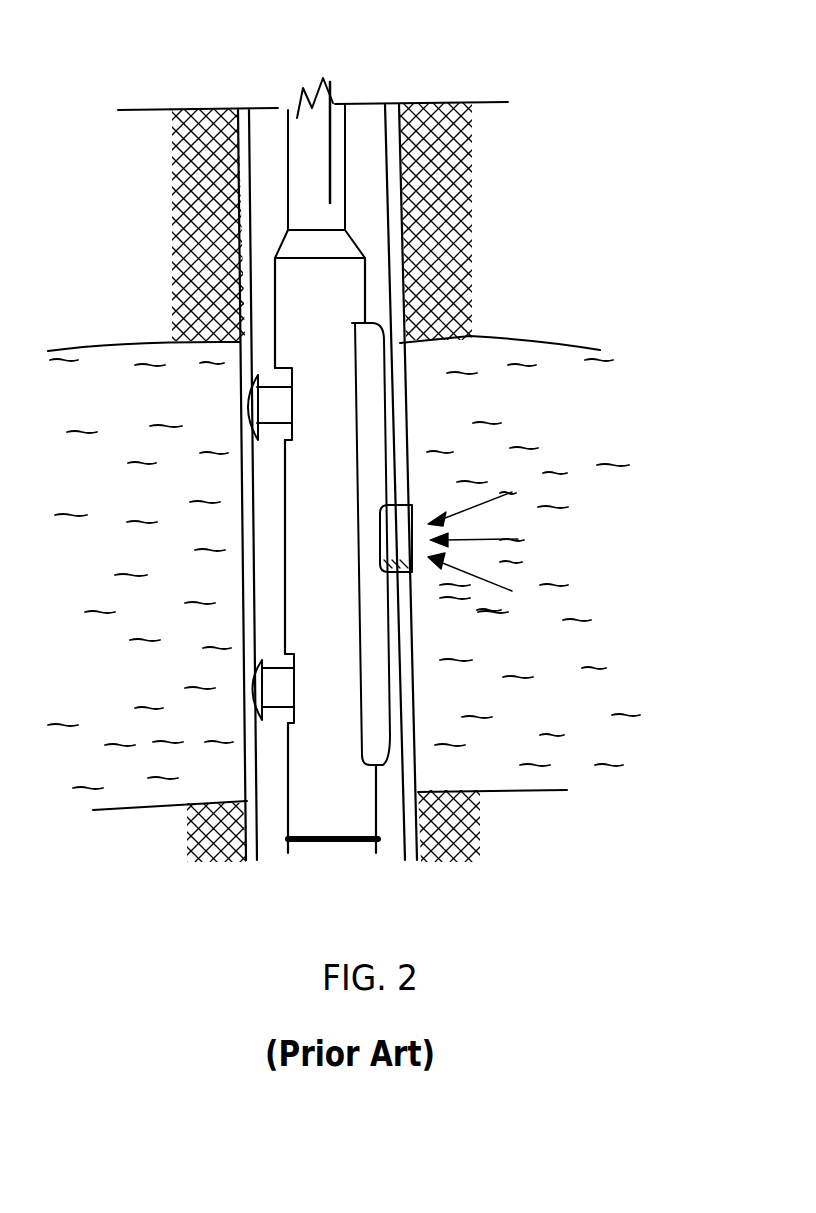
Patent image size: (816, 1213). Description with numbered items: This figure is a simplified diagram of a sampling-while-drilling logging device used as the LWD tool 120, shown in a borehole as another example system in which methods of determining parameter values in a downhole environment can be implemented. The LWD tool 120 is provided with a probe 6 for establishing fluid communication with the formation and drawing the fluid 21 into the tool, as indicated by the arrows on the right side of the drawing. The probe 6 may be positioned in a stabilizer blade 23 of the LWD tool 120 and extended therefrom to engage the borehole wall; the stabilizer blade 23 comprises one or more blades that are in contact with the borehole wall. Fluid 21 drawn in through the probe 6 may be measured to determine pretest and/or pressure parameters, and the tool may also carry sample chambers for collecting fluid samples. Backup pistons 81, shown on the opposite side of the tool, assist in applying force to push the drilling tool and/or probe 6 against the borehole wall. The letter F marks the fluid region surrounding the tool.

The LWD tool 120 is at (602, 68).
The backup pistons 81 is at (240, 404).
The stabilizer blade 23 is at (373, 428).
The probe 6 is at (397, 539).
The fluid 21 is at (587, 437).
The fluid flow F is at (502, 612).